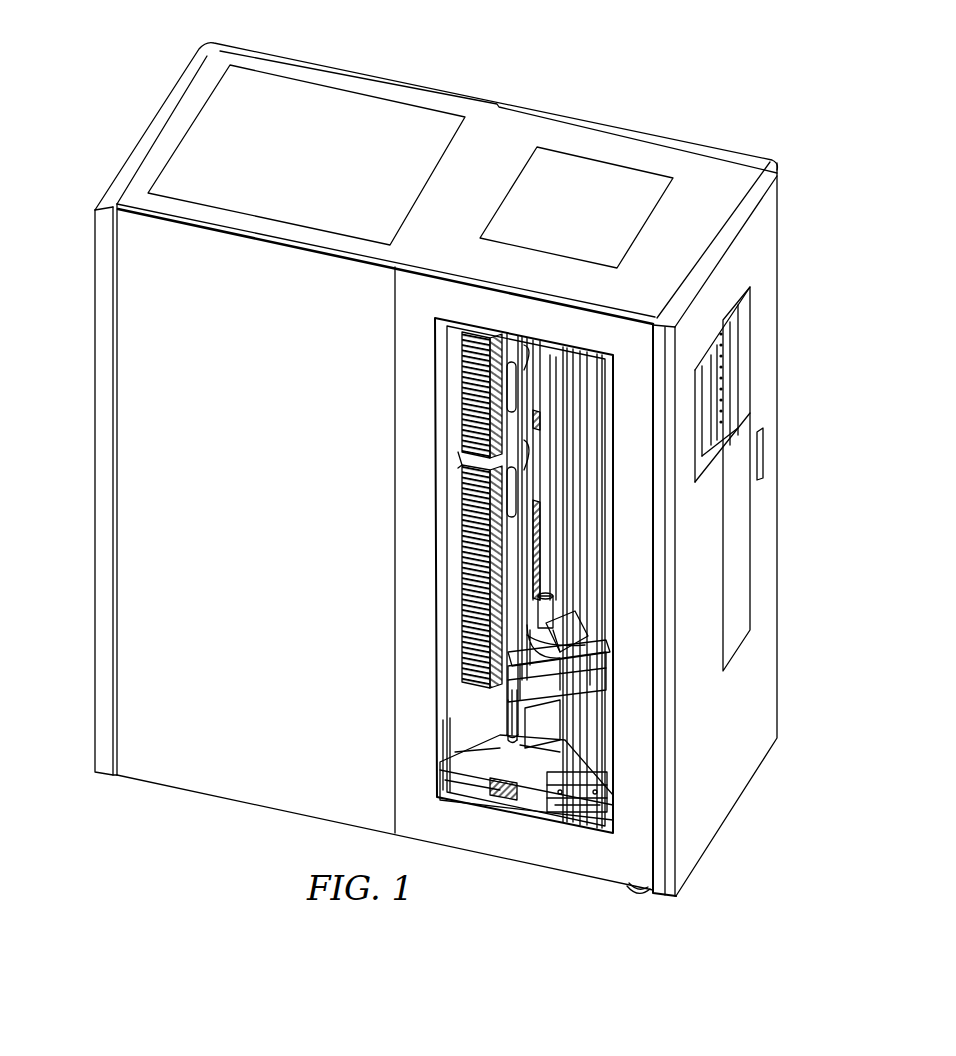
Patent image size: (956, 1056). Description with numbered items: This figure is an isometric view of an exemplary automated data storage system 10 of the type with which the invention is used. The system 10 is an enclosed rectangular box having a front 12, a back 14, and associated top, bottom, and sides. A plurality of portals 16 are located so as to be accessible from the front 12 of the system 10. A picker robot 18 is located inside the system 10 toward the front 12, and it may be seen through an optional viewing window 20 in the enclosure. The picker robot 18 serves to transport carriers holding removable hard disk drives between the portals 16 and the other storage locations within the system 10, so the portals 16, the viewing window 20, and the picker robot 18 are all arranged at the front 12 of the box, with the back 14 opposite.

The automated data storage system 10 is at (560, 70).
The front 12 is at (740, 583).
The back 14 is at (92, 489).
The portals 16 is at (772, 356).
The picker robot 18 is at (485, 707).
The viewing window 20 is at (440, 628).